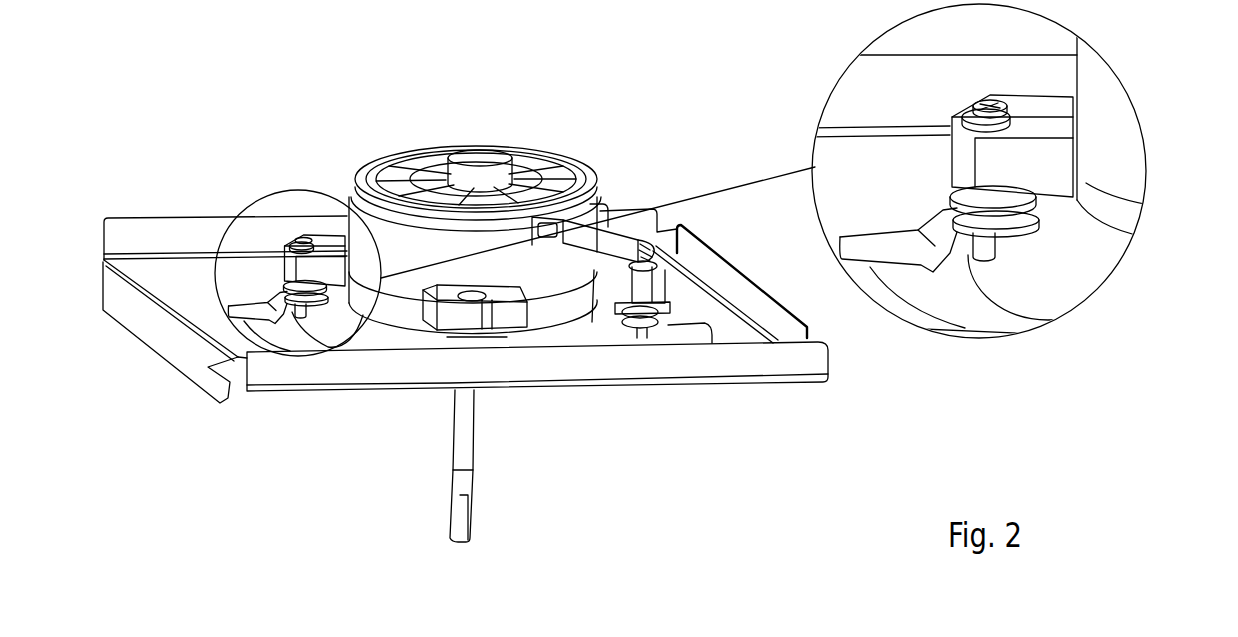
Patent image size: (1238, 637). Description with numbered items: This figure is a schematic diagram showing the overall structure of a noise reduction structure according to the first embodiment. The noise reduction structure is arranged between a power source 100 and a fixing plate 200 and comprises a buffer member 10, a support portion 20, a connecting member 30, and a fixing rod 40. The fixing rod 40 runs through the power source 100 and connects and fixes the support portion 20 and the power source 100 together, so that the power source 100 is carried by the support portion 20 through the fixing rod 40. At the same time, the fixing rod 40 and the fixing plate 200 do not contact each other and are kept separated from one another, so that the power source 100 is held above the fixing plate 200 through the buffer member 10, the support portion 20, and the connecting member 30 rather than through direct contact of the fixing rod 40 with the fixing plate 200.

The buffer member 10 is at (1010, 237).
The support portion 20 is at (1028, 223).
The connecting member 30 is at (892, 250).
The fixing rod 40 is at (985, 255).
The power source 100 is at (518, 172).
The fixing plate 200 is at (658, 365).